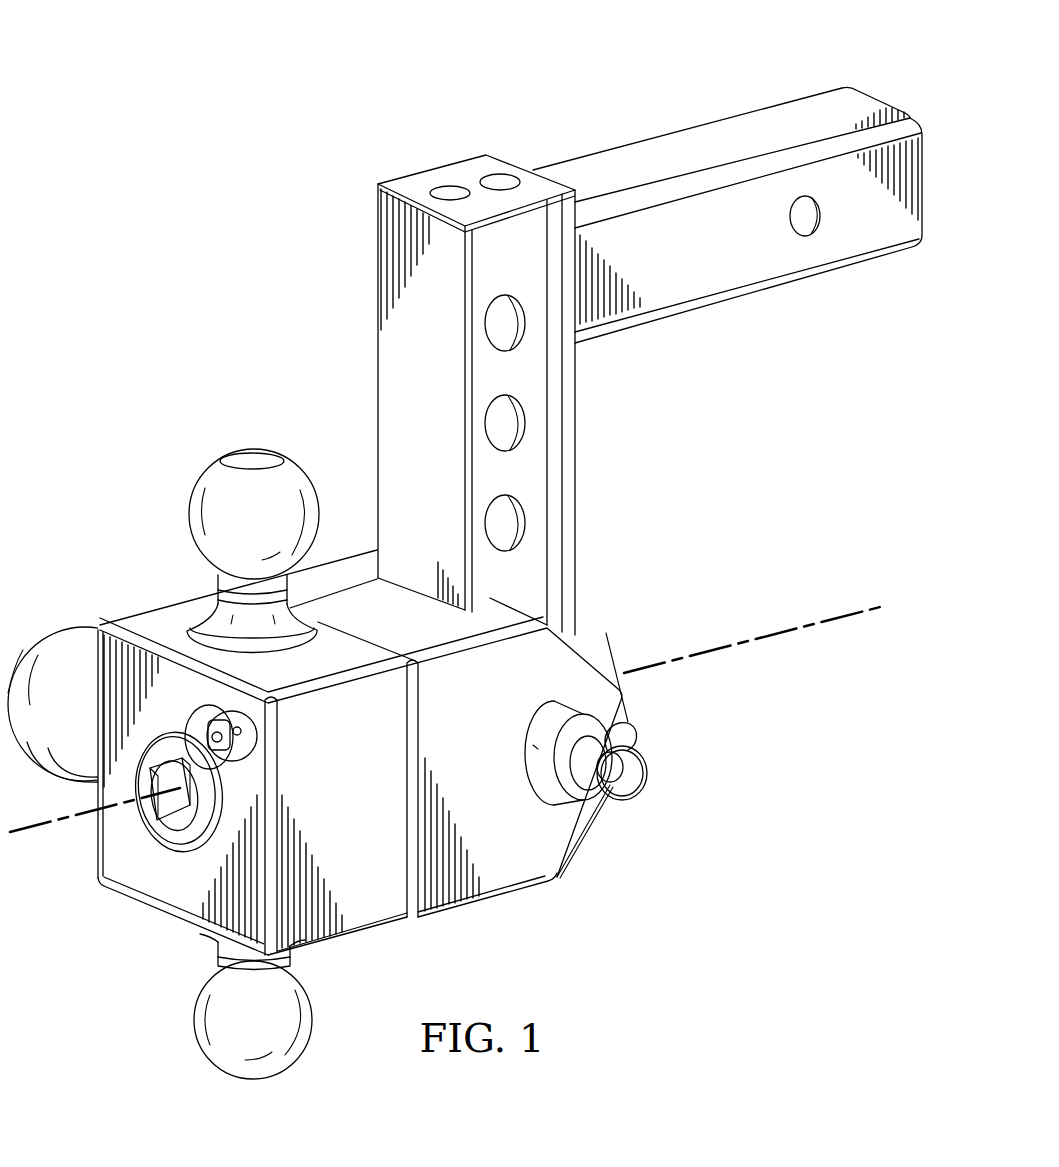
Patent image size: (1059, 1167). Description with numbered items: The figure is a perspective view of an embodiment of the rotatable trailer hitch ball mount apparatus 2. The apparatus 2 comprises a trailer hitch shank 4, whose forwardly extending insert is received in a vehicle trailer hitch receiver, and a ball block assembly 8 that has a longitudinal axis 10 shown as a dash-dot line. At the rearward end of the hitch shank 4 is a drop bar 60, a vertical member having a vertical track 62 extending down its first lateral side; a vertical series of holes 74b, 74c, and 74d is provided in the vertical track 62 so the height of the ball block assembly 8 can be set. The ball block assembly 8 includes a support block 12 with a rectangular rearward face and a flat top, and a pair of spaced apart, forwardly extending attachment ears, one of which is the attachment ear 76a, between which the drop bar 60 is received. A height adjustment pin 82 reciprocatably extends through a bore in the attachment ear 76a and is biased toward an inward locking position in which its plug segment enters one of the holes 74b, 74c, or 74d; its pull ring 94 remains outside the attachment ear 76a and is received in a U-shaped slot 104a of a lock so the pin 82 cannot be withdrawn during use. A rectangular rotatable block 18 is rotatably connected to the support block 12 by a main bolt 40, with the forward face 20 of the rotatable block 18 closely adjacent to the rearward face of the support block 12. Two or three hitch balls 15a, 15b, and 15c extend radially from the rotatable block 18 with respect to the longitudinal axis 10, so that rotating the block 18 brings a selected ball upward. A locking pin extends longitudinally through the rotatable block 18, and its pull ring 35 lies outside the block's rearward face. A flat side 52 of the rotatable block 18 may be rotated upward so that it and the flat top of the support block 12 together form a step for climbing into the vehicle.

The rotatable trailer hitch ball mount apparatus 2 is at (232, 75).
The trailer hitch shank 4 is at (686, 131).
The ball block assembly 8 is at (100, 487).
The longitudinal axis 10 is at (855, 620).
The support block 12 is at (593, 653).
The hitch ball 15a is at (252, 1078).
The hitch ball 15b is at (235, 450).
The hitch ball 15c is at (58, 627).
The rotatable block 18 is at (162, 896).
The forward face 20 is at (410, 723).
The pull ring 35 is at (243, 778).
The main bolt 40 is at (167, 747).
The flat side 52 is at (373, 915).
The drop bar 60 is at (576, 402).
The vertical track 62 is at (530, 480).
The hole 74b is at (495, 527).
The hole 74c is at (495, 427).
The hole 74d is at (495, 327).
The attachment ear 76a is at (507, 877).
The height adjustment pin 82 is at (610, 790).
The pull ring 94 is at (648, 780).
The U-shaped slot 104a is at (633, 723).